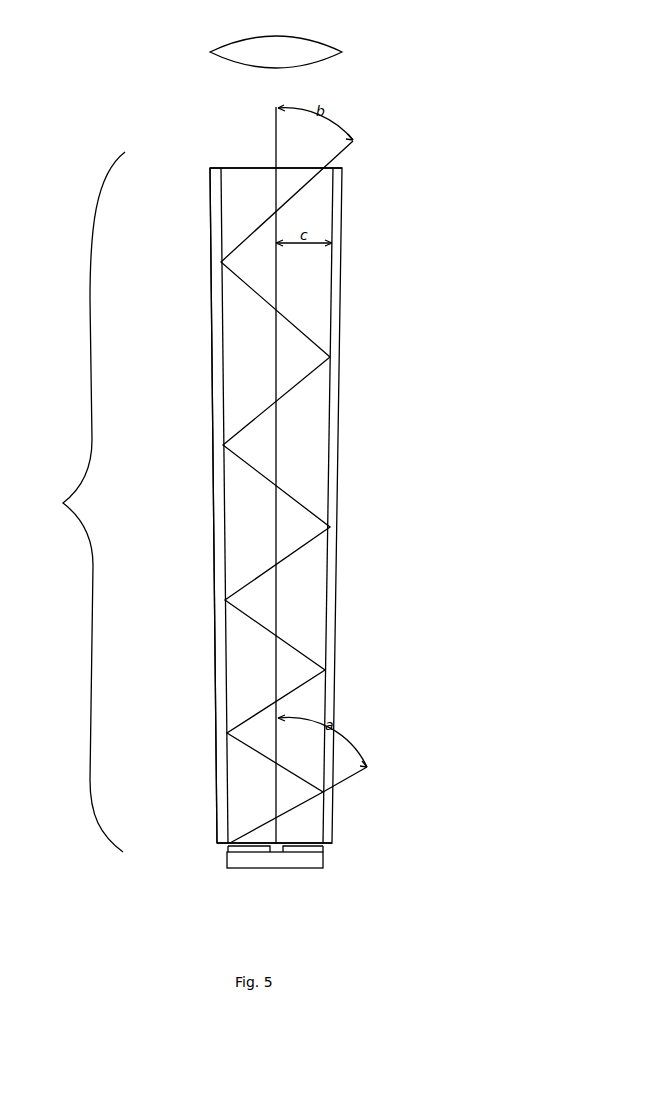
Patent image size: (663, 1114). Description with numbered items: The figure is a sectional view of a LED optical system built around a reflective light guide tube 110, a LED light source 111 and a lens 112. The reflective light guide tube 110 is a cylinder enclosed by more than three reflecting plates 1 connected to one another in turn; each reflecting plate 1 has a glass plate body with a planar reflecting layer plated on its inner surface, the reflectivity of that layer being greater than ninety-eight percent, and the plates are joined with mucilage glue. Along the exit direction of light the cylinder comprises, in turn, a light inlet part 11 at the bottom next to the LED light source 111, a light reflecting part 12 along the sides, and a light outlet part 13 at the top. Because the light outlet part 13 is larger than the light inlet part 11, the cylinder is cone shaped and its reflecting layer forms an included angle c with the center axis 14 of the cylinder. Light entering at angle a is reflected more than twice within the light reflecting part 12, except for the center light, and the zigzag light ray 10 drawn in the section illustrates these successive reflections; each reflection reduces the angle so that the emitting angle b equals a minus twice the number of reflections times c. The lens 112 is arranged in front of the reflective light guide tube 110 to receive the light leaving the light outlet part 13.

The reflecting plate 1 is at (213, 535).
The light ray 10 is at (292, 647).
The light inlet part 11 is at (215, 830).
The light reflecting part 12 is at (202, 578).
The light outlet part 13 is at (195, 198).
The center axis 14 is at (276, 345).
The reflective light guide tube 110 is at (80, 502).
The LED light source 111 is at (258, 860).
The lens 112 is at (307, 53).